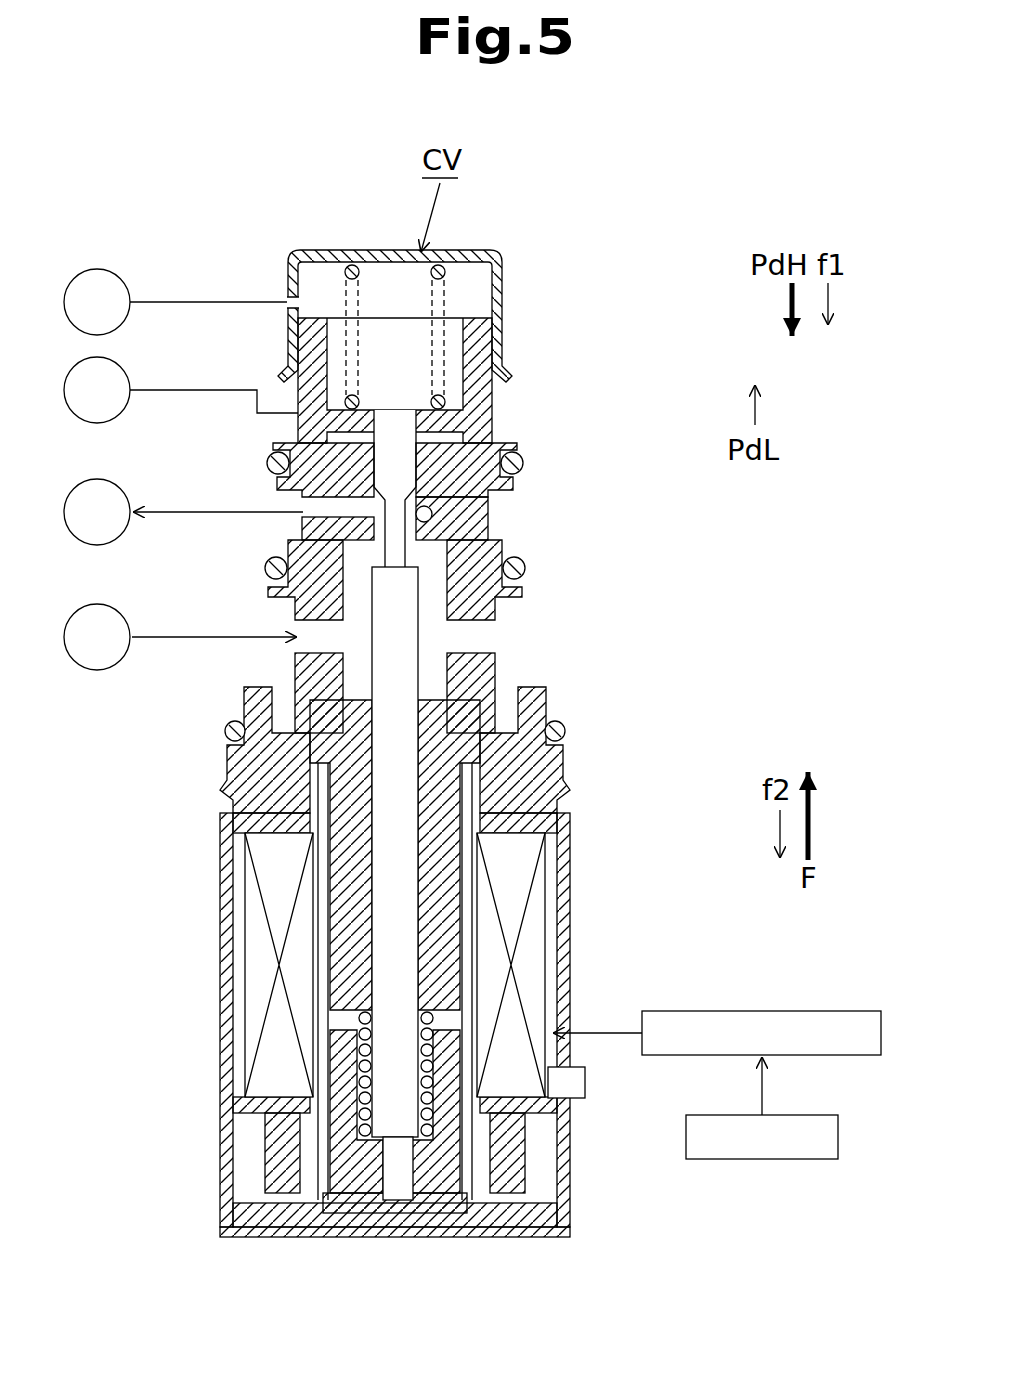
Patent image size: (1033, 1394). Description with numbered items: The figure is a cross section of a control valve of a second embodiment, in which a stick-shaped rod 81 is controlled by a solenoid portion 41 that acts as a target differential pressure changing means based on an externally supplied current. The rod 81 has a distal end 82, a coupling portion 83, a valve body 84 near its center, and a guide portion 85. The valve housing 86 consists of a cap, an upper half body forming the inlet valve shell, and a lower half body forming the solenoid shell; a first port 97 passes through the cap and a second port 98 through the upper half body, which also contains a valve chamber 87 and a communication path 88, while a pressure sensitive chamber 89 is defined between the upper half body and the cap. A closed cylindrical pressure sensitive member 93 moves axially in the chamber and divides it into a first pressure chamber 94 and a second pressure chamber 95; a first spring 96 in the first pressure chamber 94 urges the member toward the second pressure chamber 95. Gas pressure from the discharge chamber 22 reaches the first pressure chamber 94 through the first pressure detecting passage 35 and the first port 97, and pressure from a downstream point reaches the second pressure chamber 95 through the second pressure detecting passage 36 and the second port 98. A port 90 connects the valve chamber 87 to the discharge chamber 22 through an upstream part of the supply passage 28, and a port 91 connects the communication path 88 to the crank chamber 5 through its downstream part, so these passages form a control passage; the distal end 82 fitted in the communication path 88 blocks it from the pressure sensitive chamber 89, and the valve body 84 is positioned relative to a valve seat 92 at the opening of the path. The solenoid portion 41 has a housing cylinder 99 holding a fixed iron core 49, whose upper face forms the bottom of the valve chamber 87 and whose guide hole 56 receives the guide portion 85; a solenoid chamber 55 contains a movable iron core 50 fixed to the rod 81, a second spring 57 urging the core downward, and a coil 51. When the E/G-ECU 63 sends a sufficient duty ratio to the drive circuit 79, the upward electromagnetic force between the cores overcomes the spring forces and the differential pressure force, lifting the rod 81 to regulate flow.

The discharge chamber 22 is at (75, 272).
The first pressure detecting passage 35 is at (165, 300).
The second pressure detecting passage 36 is at (72, 366).
The crank chamber 5 is at (78, 481).
The supply passage 28 is at (178, 636).
The first port 97 is at (292, 300).
The second port 98 is at (298, 382).
The valve housing 86 is at (327, 258).
The first spring 96 is at (443, 263).
The pressure sensitive chamber 89 is at (492, 318).
The first pressure chamber 94 is at (413, 310).
The pressure sensitive member 93 is at (470, 388).
The distal end 82 is at (440, 470).
The second pressure chamber 95 is at (268, 463).
The port 91 is at (320, 508).
The coupling portion 83 is at (430, 505).
The communication path 88 is at (432, 517).
The valve seat 92 is at (268, 562).
The valve body 84 is at (415, 572).
The valve chamber 87 is at (470, 640).
The port 90 is at (300, 642).
The rod 81 is at (413, 715).
The fixed iron core 49 is at (345, 800).
The solenoid portion 41 is at (573, 840).
The housing cylinder 99 is at (322, 860).
The guide portion 85 is at (387, 893).
The guide hole 56 is at (380, 937).
The coil 51 is at (530, 952).
The solenoid chamber 55 is at (368, 1010).
The second spring 57 is at (367, 1063).
The movable iron core 50 is at (347, 1160).
The drive circuit 79 is at (818, 1011).
The E/G-ECU 63 is at (840, 1112).